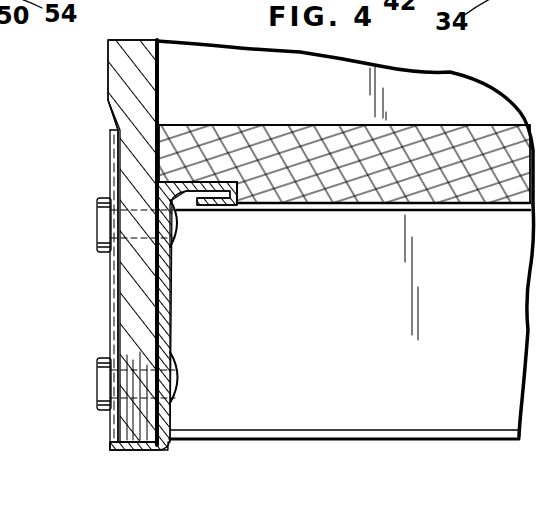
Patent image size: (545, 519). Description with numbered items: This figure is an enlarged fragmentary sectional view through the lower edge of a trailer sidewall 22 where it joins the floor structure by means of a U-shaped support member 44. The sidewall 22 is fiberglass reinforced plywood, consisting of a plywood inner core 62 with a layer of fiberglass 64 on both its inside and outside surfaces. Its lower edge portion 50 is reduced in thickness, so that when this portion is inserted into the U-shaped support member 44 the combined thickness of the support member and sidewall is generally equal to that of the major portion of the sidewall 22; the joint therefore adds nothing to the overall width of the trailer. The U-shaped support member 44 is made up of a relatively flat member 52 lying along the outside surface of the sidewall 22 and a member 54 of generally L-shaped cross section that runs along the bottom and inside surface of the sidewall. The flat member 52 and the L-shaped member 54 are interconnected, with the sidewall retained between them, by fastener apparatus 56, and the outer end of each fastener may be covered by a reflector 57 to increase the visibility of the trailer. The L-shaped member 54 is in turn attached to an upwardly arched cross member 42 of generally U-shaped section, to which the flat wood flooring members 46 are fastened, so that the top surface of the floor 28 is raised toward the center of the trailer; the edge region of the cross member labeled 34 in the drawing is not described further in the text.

The sidewall 22 is at (106, 65).
The floor 28 is at (406, 122).
The panel edge flange 34 is at (488, 441).
The cross member 42 is at (338, 412).
The U-shaped support member 44 is at (106, 315).
The flooring member 46 is at (318, 152).
The lower edge portion 50 is at (138, 425).
The flat member 52 is at (108, 270).
The L-shaped member 54 is at (172, 326).
The fastener apparatus 56 is at (181, 226).
The reflector 57 is at (96, 228).
The plywood inner core 62 is at (127, 88).
The layer of fiberglass 64 is at (108, 104).